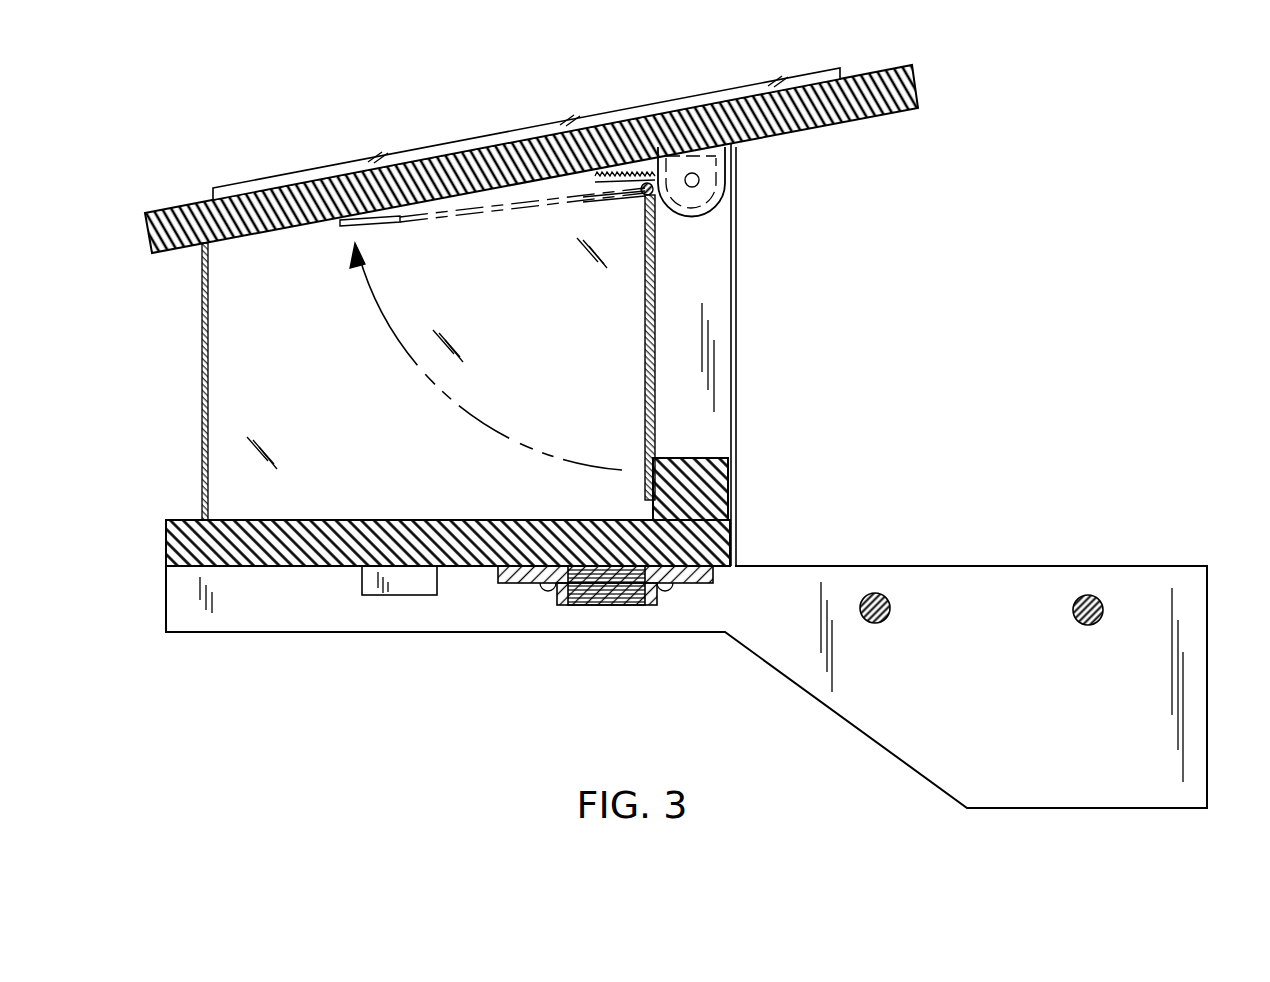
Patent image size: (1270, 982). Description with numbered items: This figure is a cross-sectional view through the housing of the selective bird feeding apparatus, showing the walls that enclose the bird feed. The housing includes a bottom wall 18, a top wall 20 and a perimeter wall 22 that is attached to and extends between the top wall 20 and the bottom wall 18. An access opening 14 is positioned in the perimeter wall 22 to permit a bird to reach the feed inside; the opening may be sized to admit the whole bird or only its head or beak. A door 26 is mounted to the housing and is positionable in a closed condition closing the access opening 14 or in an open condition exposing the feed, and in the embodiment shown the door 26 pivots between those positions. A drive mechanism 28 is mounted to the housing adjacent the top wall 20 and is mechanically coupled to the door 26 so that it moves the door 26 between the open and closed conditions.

The access opening 14 is at (666, 394).
The bottom wall 18 is at (280, 566).
The top wall 20 is at (240, 242).
The perimeter wall 22 is at (202, 403).
The door 26 is at (650, 322).
The drive mechanism 28 is at (748, 176).